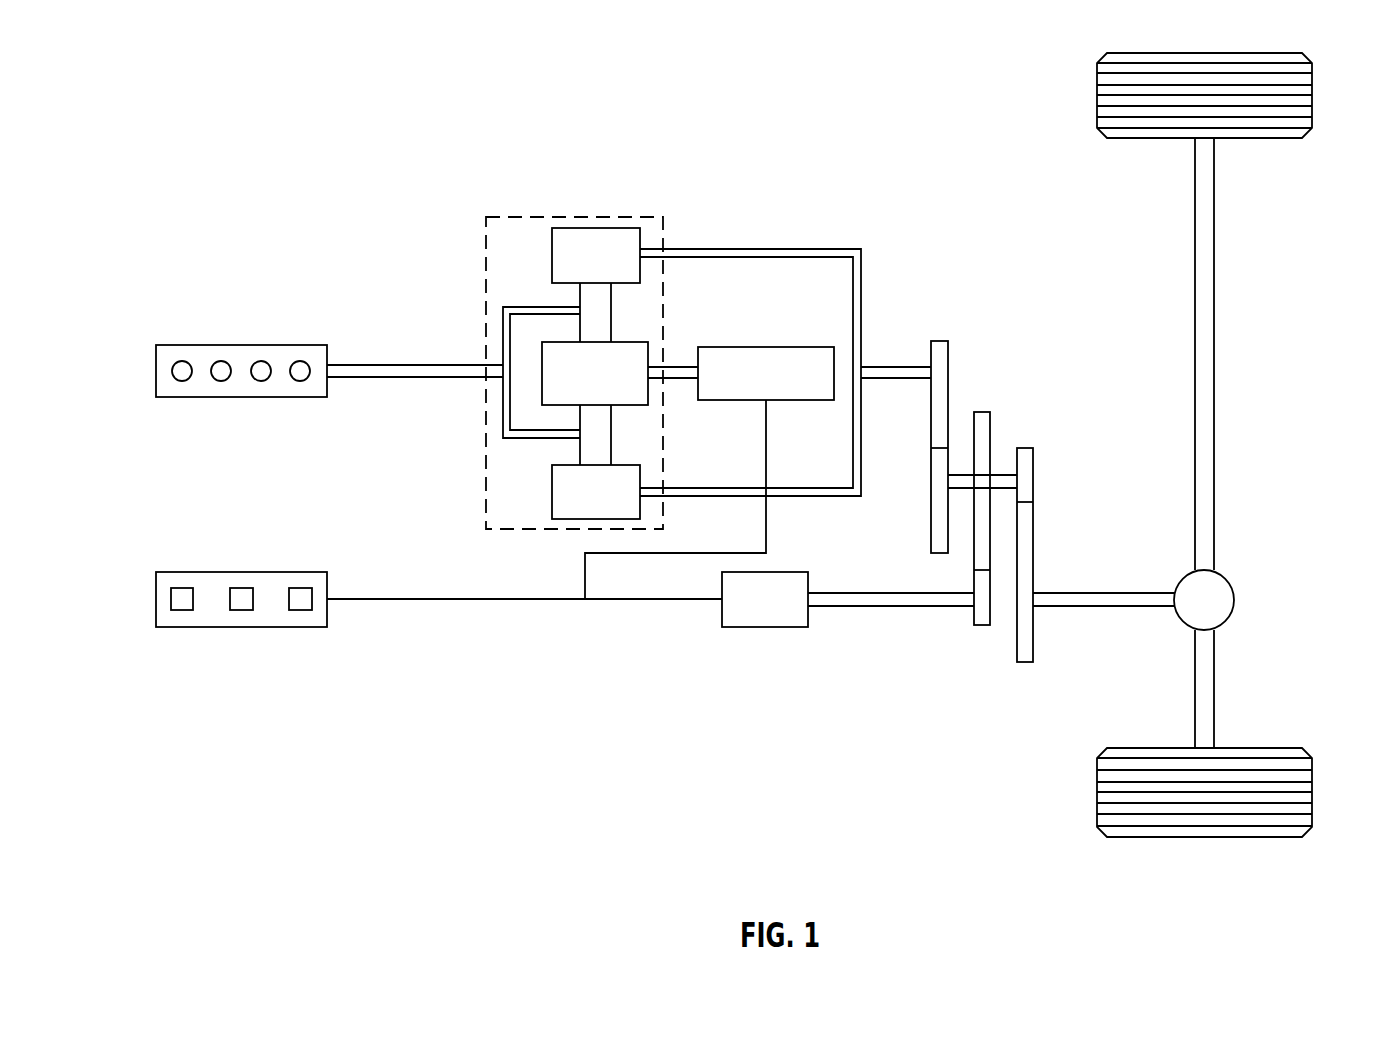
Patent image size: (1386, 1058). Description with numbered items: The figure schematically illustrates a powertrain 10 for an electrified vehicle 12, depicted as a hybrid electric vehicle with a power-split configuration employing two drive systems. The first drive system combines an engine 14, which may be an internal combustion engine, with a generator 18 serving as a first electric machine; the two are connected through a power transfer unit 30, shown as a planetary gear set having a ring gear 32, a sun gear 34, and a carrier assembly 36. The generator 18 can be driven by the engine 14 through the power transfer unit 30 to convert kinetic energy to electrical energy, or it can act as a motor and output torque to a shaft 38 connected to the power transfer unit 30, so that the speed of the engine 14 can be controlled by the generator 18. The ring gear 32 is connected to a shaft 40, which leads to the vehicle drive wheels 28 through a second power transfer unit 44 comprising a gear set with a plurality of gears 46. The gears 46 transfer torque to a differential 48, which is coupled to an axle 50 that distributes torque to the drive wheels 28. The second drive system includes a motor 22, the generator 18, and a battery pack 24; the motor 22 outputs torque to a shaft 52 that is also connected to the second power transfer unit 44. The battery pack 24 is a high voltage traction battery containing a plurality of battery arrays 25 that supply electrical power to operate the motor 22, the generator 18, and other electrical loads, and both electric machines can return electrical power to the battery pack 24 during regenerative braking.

The powertrain 10 is at (292, 118).
The electrified vehicle 12 is at (783, 194).
The engine 14 is at (240, 398).
The generator 18 is at (765, 346).
The motor 22 is at (765, 627).
The battery pack 24 is at (156, 598).
The battery arrays 25 is at (180, 610).
The vehicle drive wheels 28 is at (1312, 95).
The power transfer unit 30 is at (553, 214).
The ring gear 32 is at (596, 228).
The sun gear 34 is at (650, 391).
The carrier assembly 36 is at (503, 405).
The shaft 38 is at (673, 357).
The shaft 40 is at (905, 383).
The second power transfer unit 44 is at (1057, 292).
The gears 46 is at (940, 341).
The differential 48 is at (1235, 600).
The axle 50 is at (1216, 388).
The shaft 52 is at (910, 607).